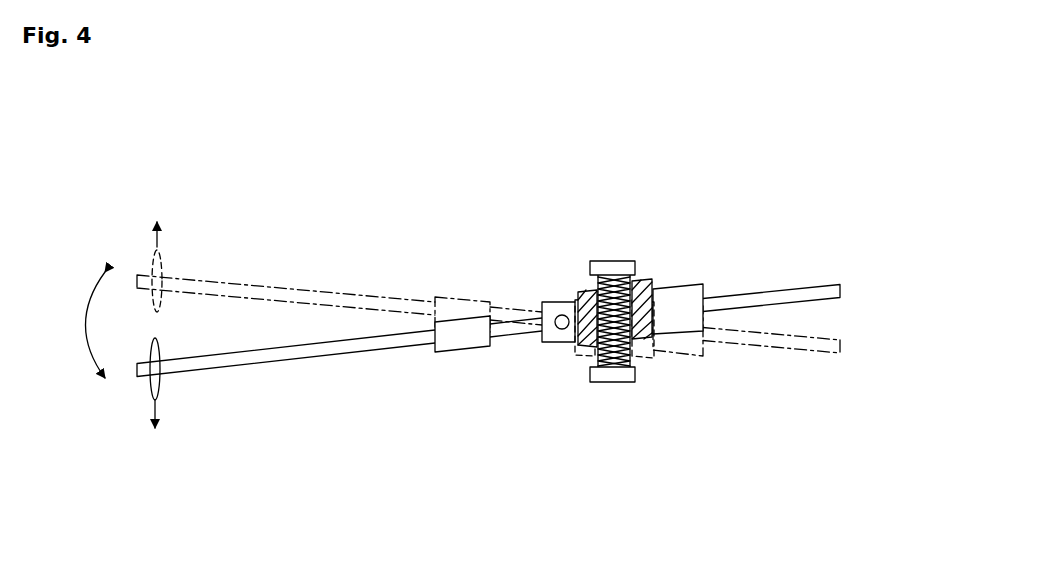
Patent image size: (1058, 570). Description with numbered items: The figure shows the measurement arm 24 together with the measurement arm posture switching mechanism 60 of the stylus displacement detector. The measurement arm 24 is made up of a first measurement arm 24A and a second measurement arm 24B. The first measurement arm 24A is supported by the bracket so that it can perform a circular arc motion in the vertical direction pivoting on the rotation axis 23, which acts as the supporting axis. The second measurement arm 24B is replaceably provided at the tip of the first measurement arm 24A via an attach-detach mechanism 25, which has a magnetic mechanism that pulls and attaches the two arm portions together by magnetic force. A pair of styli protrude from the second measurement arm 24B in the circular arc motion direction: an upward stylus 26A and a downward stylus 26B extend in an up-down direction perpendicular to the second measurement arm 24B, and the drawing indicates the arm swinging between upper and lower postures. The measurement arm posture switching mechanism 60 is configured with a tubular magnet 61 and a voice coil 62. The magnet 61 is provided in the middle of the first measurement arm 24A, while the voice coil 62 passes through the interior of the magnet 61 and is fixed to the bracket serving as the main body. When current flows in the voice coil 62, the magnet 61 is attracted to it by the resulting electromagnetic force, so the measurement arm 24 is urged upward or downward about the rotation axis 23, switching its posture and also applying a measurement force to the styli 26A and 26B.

The rotation axis 23 is at (560, 314).
The measurement arm 24 is at (391, 472).
The first measurement arm 24A is at (549, 343).
The second measurement arm 24B is at (326, 357).
The attach-detach mechanism 25 is at (470, 353).
The upward stylus 26A is at (158, 343).
The downward stylus 26B is at (163, 390).
The measurement arm posture switching mechanism 60 is at (697, 206).
The tubular magnet 61 is at (643, 282).
The voice coil 62 is at (614, 261).